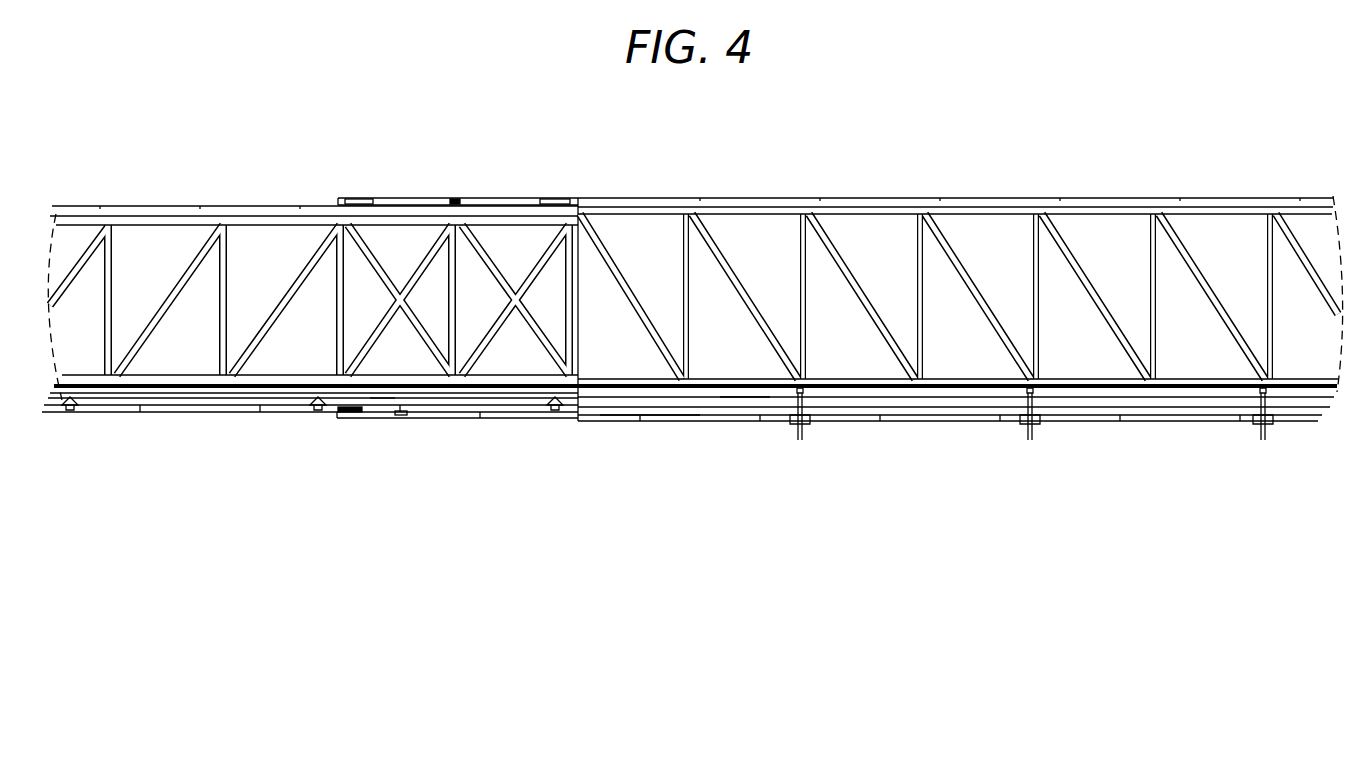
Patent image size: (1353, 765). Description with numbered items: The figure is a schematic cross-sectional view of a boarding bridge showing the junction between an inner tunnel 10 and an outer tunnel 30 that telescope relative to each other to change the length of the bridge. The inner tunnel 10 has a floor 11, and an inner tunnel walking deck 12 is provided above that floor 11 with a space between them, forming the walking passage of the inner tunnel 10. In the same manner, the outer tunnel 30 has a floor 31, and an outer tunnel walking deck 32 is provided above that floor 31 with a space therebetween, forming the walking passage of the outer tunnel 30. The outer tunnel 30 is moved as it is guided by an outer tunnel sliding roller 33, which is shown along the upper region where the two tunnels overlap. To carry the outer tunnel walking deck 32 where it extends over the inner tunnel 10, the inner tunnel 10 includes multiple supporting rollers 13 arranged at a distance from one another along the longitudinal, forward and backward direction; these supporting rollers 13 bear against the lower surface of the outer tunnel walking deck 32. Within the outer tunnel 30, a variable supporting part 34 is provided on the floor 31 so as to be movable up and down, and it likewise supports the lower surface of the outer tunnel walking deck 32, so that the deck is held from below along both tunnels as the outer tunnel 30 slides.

The inner tunnel 10 is at (250, 190).
The floor of the inner tunnel 11 is at (378, 398).
The inner tunnel walking deck 12 is at (346, 392).
The supporting rollers 13 is at (72, 407).
The outer tunnel 30 is at (783, 178).
The floor of the outer tunnel 31 is at (690, 410).
The outer tunnel walking deck 32 is at (748, 393).
The outer tunnel sliding roller 33 is at (338, 198).
The variable supporting part 34 is at (1030, 440).